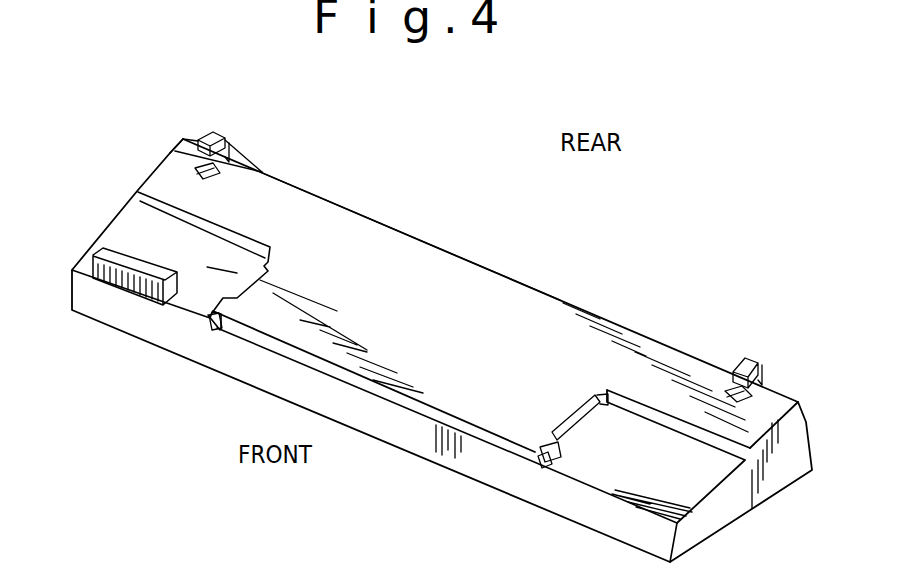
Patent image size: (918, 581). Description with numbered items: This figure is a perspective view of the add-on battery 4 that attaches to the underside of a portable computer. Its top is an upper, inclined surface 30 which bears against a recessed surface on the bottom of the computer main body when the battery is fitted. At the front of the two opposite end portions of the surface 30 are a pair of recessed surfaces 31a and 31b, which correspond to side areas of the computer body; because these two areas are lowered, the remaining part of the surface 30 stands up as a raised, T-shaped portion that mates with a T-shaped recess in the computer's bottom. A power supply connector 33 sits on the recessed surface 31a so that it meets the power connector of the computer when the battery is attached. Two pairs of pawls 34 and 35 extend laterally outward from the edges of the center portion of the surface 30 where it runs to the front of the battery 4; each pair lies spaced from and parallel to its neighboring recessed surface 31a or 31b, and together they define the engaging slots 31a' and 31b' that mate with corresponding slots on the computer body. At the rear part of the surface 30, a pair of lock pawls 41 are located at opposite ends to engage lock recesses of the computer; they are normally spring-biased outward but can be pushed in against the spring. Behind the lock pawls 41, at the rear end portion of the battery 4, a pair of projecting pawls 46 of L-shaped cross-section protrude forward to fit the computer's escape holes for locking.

The add-on battery 4 is at (454, 232).
The upper inclined surface 30 is at (445, 334).
The recessed surface 31a is at (162, 231).
The engaging slot 31a' is at (169, 367).
The recessed surface 31b is at (701, 482).
The engaging slot 31b' is at (491, 495).
The power supply connector 33 is at (125, 257).
The pawls 34 is at (606, 405).
The pawls 35 is at (557, 468).
The lock pawl 41 is at (187, 153).
The projecting pawl 46 is at (229, 142).